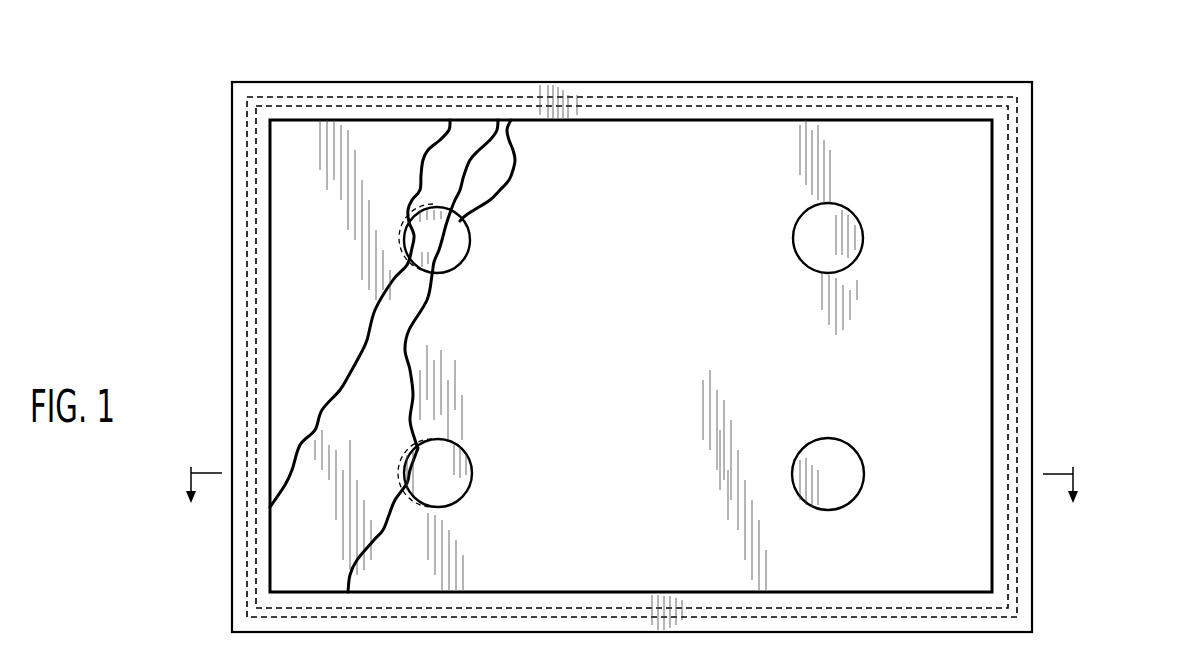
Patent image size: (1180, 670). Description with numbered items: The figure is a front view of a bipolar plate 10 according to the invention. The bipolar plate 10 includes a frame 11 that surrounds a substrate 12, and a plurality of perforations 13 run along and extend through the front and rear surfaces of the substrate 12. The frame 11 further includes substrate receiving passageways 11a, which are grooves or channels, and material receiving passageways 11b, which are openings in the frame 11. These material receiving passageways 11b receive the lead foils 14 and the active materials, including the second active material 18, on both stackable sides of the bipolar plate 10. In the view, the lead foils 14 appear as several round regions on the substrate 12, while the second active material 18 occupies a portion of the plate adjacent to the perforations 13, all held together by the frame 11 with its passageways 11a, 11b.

The bipolar plate 10 is at (1068, 81).
The frame 11 is at (1033, 257).
The substrate receiving passageways 11a is at (428, 95).
The material receiving passageways 11b is at (968, 176).
The substrate 12 is at (642, 294).
The perforations 13 is at (511, 120).
The lead foils 14 is at (424, 247).
The second active material 18 is at (295, 229).